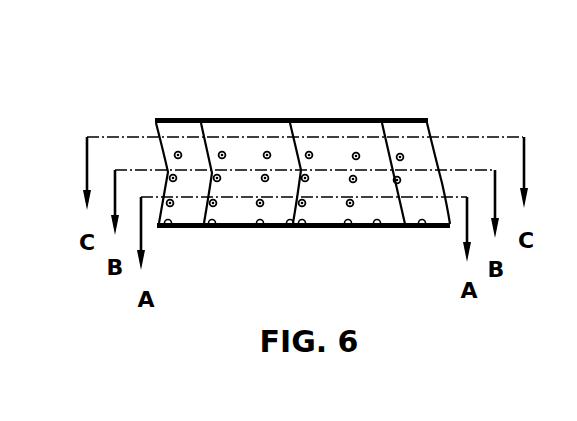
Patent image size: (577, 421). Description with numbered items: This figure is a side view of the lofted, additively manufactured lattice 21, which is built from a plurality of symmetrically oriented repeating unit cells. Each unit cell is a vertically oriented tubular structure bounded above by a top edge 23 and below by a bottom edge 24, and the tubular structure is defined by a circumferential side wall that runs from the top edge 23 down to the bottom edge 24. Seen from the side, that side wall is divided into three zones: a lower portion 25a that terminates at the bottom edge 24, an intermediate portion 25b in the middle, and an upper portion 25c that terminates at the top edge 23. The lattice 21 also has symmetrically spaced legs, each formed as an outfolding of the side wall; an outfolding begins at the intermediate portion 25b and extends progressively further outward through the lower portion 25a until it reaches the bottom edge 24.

The additively manufactured lattice 21 is at (166, 89).
The top edge 23 is at (310, 120).
The bottom edge 24 is at (350, 227).
The lower portion 25a is at (227, 217).
The intermediate portion 25b is at (335, 170).
The upper portion 25c is at (360, 130).